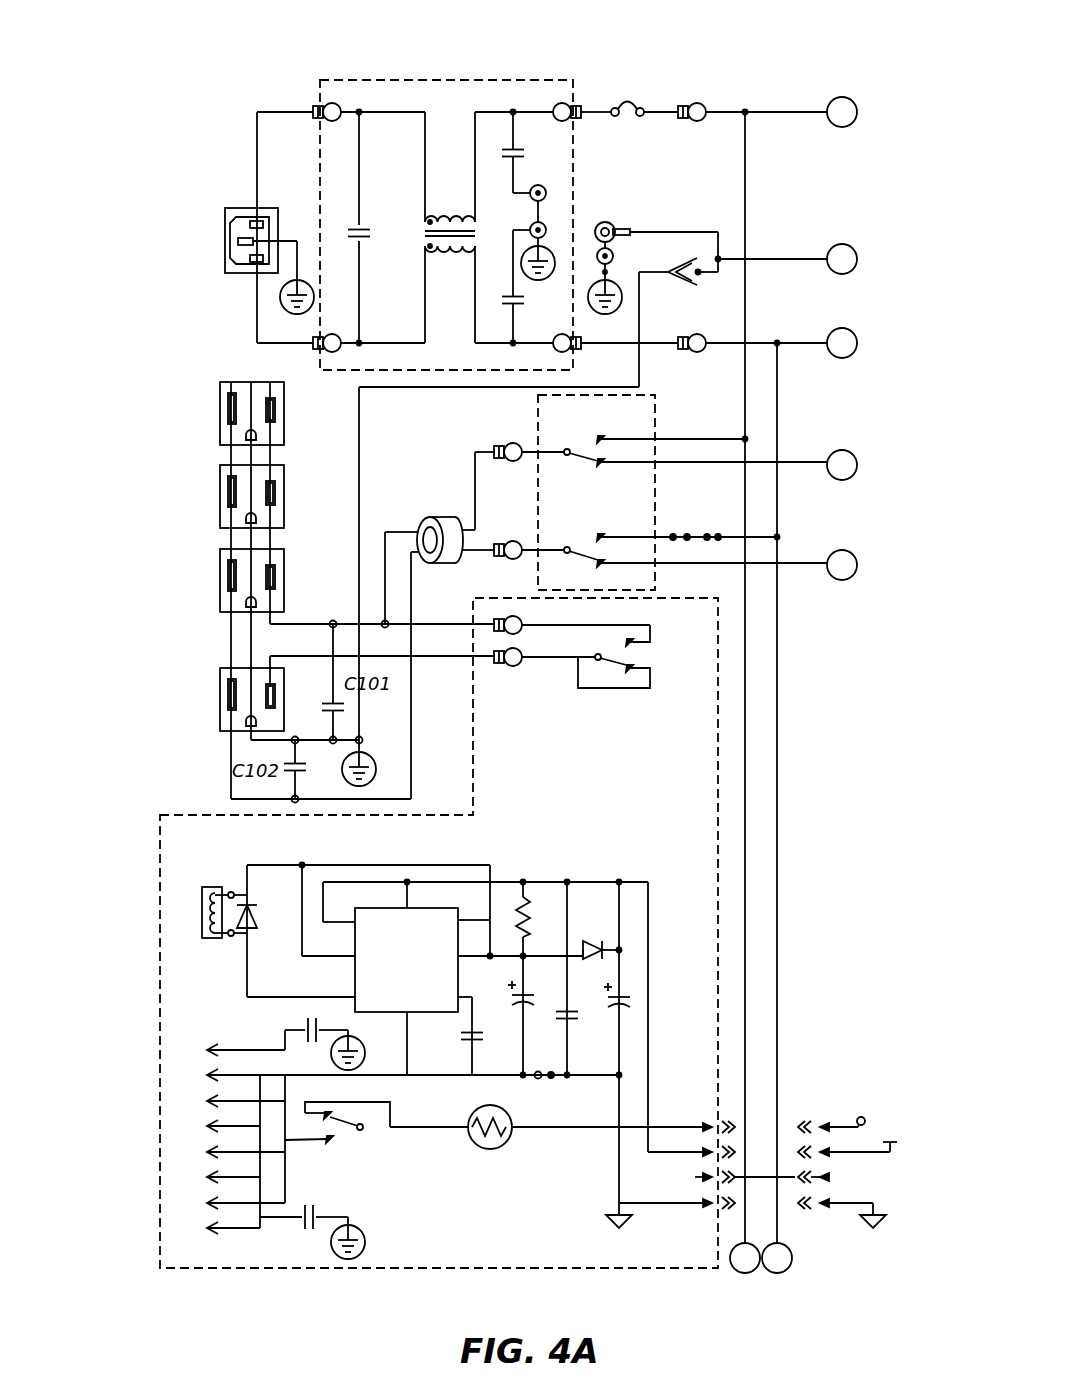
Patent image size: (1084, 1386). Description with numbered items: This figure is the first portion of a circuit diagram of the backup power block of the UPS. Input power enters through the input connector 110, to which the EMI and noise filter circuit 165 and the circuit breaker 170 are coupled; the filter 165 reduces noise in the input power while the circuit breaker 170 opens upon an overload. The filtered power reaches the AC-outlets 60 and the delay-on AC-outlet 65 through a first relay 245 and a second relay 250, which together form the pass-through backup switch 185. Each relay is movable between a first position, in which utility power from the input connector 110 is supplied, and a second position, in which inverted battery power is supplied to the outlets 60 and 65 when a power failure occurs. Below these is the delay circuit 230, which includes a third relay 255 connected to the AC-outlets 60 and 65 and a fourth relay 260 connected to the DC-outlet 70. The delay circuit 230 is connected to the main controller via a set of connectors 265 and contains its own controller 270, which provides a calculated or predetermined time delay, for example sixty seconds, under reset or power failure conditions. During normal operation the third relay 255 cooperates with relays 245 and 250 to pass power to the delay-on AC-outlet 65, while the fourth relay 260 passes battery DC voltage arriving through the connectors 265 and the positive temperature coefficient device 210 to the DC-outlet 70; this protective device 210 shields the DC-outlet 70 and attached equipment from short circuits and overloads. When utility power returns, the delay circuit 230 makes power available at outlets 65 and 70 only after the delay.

The EMI and noise filter circuit 165 is at (478, 78).
The circuit breaker 170 is at (646, 54).
The input connector 110 is at (225, 262).
The AC-outlets 60 is at (220, 410).
The delay-on AC-outlet 65 is at (220, 697).
The first relay 245 is at (548, 414).
The pass-through backup switch 185 is at (655, 408).
The second relay 250 is at (624, 504).
The third relay 255 is at (660, 652).
The controller 270 is at (355, 973).
The delay circuit 230 is at (160, 1125).
The set of connectors 265 is at (810, 1068).
The fourth relay 260 is at (378, 1160).
The PTC 210 is at (498, 1140).
The DC-outlet 70 is at (238, 1242).